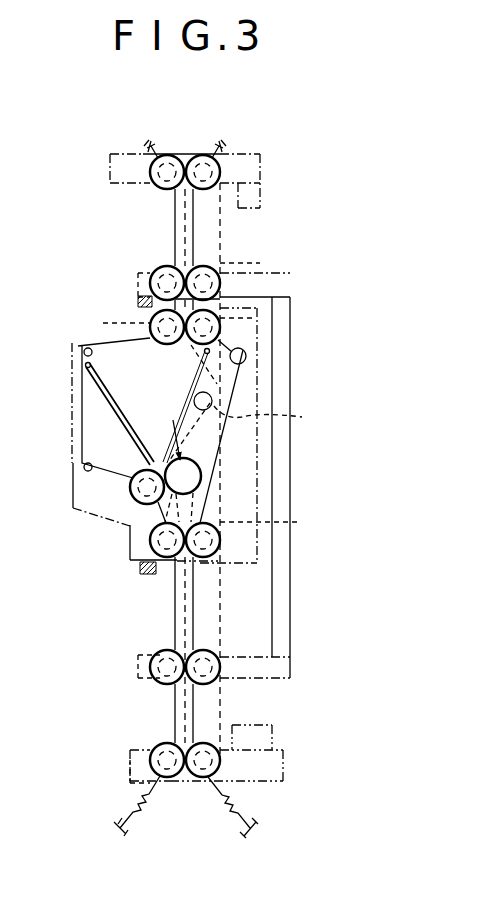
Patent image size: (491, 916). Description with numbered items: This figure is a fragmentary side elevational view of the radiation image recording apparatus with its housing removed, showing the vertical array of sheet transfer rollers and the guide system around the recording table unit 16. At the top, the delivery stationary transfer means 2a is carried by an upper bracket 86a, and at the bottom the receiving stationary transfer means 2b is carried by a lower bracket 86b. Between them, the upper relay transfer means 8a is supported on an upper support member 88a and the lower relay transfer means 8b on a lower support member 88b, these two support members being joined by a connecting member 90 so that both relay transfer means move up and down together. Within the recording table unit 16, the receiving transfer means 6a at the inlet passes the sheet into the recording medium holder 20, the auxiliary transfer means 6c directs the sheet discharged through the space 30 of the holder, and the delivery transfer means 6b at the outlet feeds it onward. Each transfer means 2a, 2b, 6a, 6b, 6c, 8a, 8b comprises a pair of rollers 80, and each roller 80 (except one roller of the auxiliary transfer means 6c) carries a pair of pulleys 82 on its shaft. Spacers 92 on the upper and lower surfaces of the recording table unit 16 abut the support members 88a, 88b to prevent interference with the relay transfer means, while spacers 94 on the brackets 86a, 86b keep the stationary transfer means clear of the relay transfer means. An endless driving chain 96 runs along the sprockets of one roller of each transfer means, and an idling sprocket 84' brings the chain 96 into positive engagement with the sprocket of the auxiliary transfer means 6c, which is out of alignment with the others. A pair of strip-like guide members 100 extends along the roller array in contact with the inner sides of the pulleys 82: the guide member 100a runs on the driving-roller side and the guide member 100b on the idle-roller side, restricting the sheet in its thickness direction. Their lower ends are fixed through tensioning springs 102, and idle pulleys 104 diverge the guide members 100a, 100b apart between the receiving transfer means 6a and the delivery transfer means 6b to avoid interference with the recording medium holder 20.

The delivery stationary transfer means 2a is at (197, 133).
The receiving stationary transfer means 2b is at (182, 796).
The receiving transfer means 6a is at (233, 329).
The delivery transfer means 6b is at (228, 545).
The auxiliary transfer means 6c is at (209, 476).
The upper relay transfer means 8a is at (146, 268).
The lower relay transfer means 8b is at (153, 645).
The recording table unit 16 is at (72, 500).
The recording medium holder 20 is at (113, 418).
The space 30 is at (145, 463).
The roller 80 is at (206, 276).
The pulley 82 is at (212, 172).
The idling sprocket 84' is at (265, 392).
The upper bracket 86a is at (116, 162).
The lower bracket 86b is at (290, 768).
The upper support member 88a is at (289, 274).
The lower support member 88b is at (291, 670).
The connecting member 90 is at (291, 440).
The spacer 92 is at (138, 304).
The spacer 94 is at (263, 200).
The endless driving chain 96 is at (306, 414).
The guide member 100 is at (211, 471).
The guide member on the driving-roller side 100a is at (196, 215).
The guide member on the idle-roller side 100b is at (176, 215).
The tensioning spring 102 is at (141, 800).
The idle pulley 104 is at (84, 352).